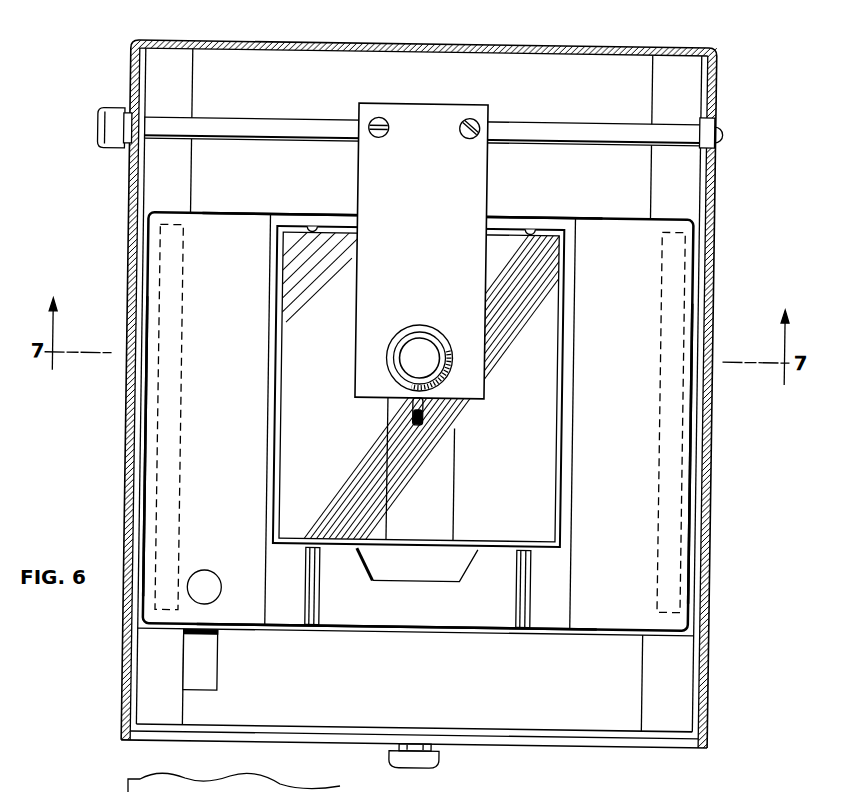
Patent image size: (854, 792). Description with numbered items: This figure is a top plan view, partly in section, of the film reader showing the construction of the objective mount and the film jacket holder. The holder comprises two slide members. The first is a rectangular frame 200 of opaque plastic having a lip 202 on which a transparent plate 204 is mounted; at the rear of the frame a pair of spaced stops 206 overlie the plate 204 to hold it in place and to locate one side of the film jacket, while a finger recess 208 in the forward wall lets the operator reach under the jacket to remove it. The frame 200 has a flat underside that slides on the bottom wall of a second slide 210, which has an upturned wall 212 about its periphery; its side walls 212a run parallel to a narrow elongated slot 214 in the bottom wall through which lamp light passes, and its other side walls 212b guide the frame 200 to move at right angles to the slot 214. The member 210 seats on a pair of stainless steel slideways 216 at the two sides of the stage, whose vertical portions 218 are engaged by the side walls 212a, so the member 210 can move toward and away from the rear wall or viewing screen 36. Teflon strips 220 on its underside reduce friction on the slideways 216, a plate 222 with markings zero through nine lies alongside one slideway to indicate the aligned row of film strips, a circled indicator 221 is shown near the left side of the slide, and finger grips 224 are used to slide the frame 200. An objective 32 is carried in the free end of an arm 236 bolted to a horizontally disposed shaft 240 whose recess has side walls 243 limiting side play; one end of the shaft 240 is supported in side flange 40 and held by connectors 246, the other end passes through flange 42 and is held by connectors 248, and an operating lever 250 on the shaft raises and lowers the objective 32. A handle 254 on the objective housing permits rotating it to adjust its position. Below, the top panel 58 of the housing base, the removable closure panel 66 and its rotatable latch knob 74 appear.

The objective 32 is at (419, 325).
The viewing screen 36 is at (311, 42).
The side flange 40 is at (708, 176).
The side flange 42 is at (130, 178).
The top panel 58 is at (305, 724).
The closure panel 66 is at (535, 733).
The rotatable knob 74 is at (396, 755).
The frame 200 is at (573, 342).
The lip 202 is at (560, 470).
The transparent plate 204 is at (543, 428).
The stops 206 is at (309, 227).
The finger recess 208 is at (446, 575).
The second slide 210 is at (208, 478).
The upturned wall 212 is at (497, 642).
The side walls 212a is at (146, 461).
The side walls 212b is at (259, 215).
The slot 214 is at (448, 509).
The slideways 216 is at (187, 713).
The vertical portions 218 is at (139, 672).
The strips 220 is at (158, 303).
The indicator dial 221 is at (208, 573).
The plate 222 is at (221, 666).
The finger grips 224 is at (323, 599).
The arm 236 is at (406, 210).
The shaft 240 is at (258, 123).
The side walls 243 is at (364, 123).
The connectors 246 is at (713, 125).
The connectors 248 is at (122, 116).
The operating lever 250 is at (94, 146).
The handle 254 is at (413, 414).